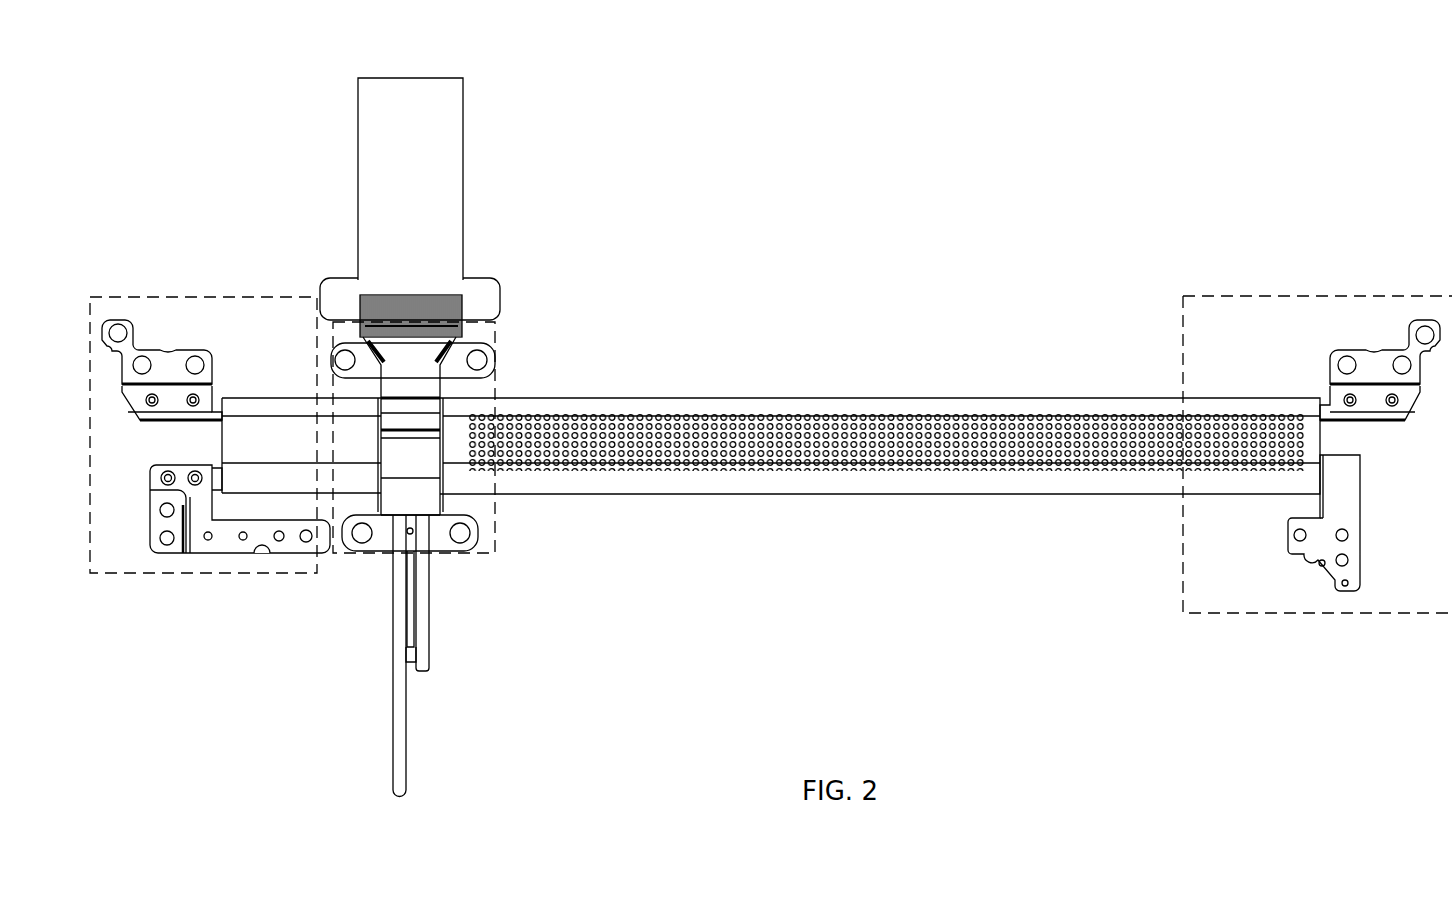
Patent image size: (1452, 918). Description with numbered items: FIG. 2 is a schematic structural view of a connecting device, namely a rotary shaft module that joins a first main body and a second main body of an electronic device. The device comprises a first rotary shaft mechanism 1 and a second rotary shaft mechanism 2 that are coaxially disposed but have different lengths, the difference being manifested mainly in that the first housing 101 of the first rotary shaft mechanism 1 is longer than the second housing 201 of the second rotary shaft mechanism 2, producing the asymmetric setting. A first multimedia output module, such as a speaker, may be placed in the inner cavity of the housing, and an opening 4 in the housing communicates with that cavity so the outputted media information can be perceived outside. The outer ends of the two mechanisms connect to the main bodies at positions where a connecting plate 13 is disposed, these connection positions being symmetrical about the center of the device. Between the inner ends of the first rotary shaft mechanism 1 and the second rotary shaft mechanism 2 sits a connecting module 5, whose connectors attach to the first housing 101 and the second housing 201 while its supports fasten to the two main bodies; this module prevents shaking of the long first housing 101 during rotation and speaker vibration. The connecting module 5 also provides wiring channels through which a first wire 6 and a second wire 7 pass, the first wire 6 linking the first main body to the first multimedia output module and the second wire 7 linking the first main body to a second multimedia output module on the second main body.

The first rotary shaft mechanism 1 is at (1287, 297).
The second rotary shaft mechanism 2 is at (160, 296).
The opening 4 is at (733, 446).
The connecting module 5 is at (498, 334).
The first wire 6 is at (412, 583).
The second wire 7 is at (392, 678).
The connecting plate 13 is at (225, 557).
The first housing 101 is at (1043, 395).
The second housing 201 is at (274, 396).